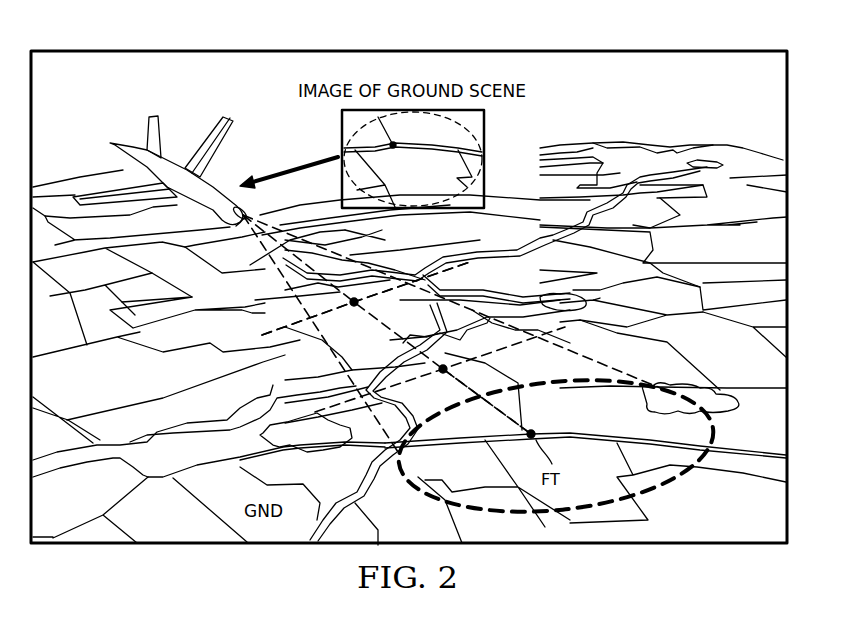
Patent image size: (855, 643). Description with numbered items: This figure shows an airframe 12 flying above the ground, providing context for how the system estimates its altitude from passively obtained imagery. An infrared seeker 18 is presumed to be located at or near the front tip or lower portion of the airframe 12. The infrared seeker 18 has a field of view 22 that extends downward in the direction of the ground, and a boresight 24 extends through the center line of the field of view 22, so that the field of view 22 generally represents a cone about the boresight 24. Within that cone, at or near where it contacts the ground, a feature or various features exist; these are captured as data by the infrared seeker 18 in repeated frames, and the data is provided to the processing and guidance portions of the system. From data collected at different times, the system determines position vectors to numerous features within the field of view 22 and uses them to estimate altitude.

The airframe 12 is at (152, 117).
The infrared seeker 18 is at (236, 225).
The field of view 22 is at (312, 326).
The boresight 24 is at (505, 412).